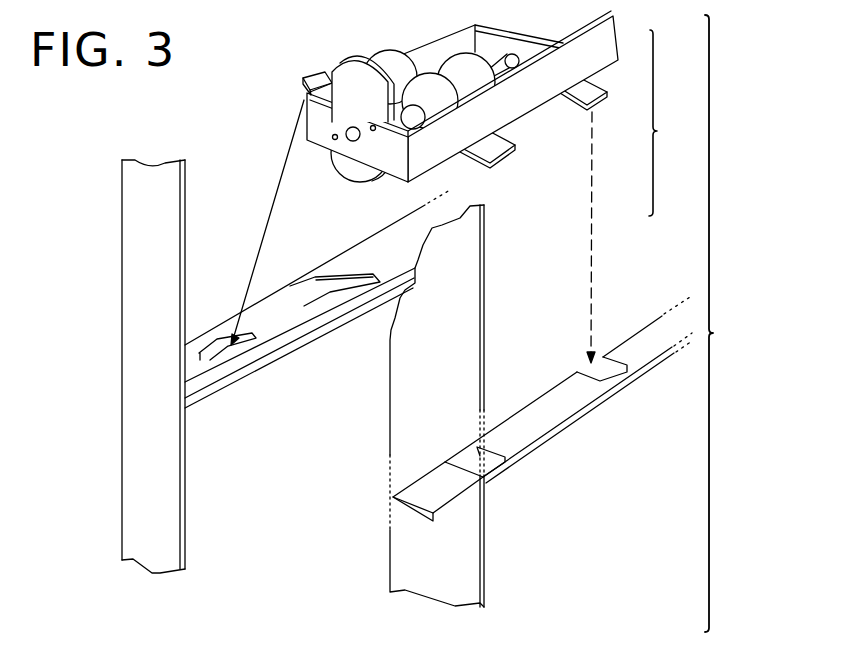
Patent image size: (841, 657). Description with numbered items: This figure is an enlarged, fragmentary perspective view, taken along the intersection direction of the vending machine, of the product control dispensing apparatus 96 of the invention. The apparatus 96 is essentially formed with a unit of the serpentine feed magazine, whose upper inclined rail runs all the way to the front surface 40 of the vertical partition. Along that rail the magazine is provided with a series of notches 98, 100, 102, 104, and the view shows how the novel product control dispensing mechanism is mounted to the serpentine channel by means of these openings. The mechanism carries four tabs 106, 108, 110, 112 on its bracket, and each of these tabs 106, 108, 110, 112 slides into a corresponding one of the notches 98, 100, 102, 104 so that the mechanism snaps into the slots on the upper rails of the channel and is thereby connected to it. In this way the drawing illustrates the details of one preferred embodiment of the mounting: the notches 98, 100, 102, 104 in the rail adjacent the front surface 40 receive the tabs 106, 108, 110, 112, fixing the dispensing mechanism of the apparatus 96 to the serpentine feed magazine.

The front surface 40 is at (268, 303).
The product control dispensing apparatus 96 is at (702, 323).
The notch 98 is at (238, 357).
The notch 100 is at (333, 293).
The notch 102 is at (582, 373).
The notch 104 is at (468, 450).
The tab 106 is at (498, 147).
The tab 108 is at (590, 90).
The tab 110 is at (303, 85).
The tab 112 is at (350, 177).